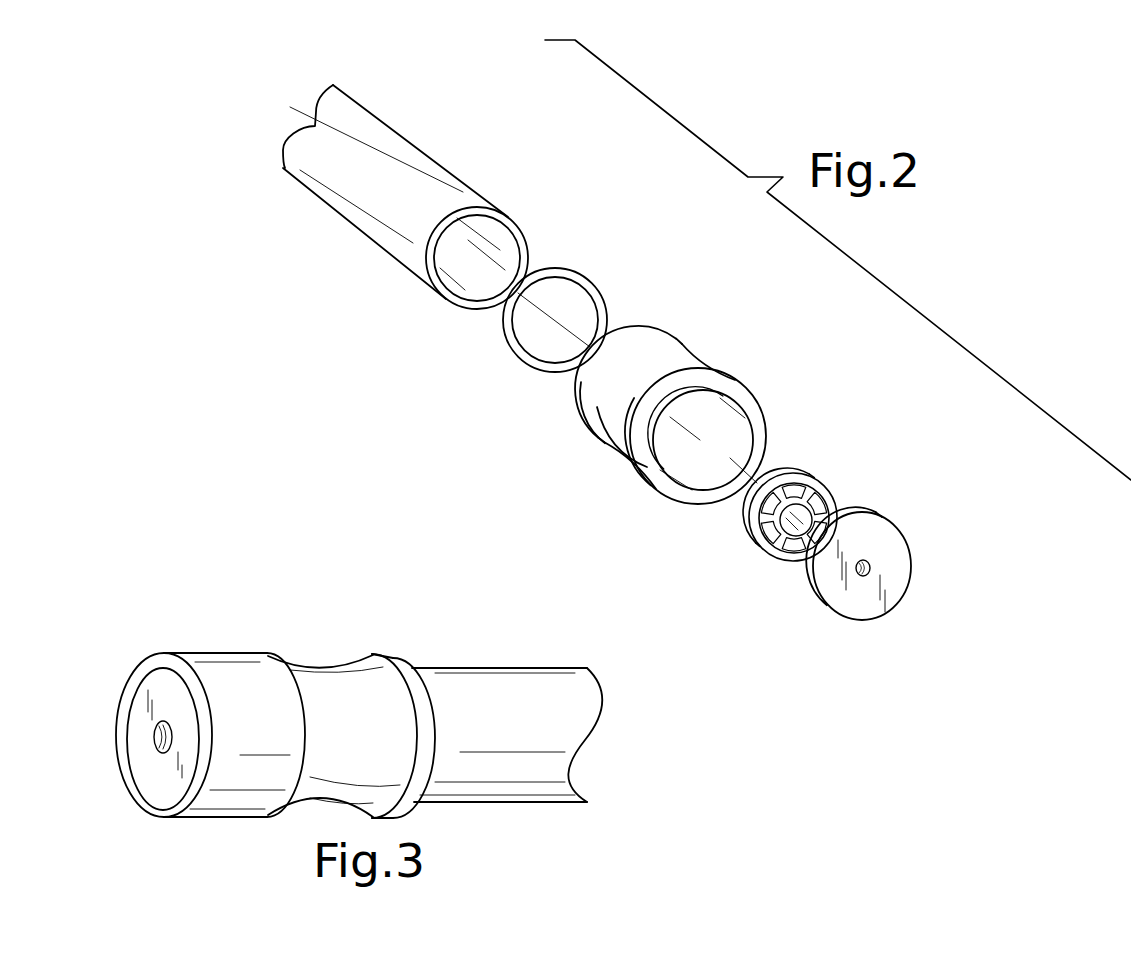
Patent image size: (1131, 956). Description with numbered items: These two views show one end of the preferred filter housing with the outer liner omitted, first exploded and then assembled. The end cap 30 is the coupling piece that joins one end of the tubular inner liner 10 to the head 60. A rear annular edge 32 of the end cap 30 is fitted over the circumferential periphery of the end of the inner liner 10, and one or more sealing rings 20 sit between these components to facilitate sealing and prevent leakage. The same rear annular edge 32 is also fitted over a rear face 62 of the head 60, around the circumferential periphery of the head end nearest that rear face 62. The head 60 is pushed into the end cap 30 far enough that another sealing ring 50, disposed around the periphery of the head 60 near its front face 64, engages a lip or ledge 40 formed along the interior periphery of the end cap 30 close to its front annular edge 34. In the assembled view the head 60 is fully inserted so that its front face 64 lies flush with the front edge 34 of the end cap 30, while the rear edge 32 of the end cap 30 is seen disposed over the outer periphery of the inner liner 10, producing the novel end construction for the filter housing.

In FIG. 2, the inner liner 10 is at (405, 167).
In FIG. 3, the inner liner 10 is at (483, 690).
In FIG. 2, the sealing ring 20 is at (568, 267).
In FIG. 2, the end cap 30 is at (695, 430).
In FIG. 3, the end cap 30 is at (248, 708).
In FIG. 2, the rear annular edge 32 is at (638, 328).
In FIG. 3, the rear annular edge 32 is at (393, 655).
In FIG. 2, the front annular edge 34 is at (733, 393).
In FIG. 3, the front annular edge 34 is at (130, 777).
In FIG. 2, the lip or ledge 40 is at (702, 467).
In FIG. 2, the sealing ring 50 is at (803, 567).
In FIG. 2, the head 60 is at (906, 528).
In FIG. 3, the head 60 is at (128, 700).
In FIG. 2, the rear face 62 is at (806, 529).
In FIG. 2, the front face 64 is at (931, 583).
In FIG. 3, the front face 64 is at (143, 717).